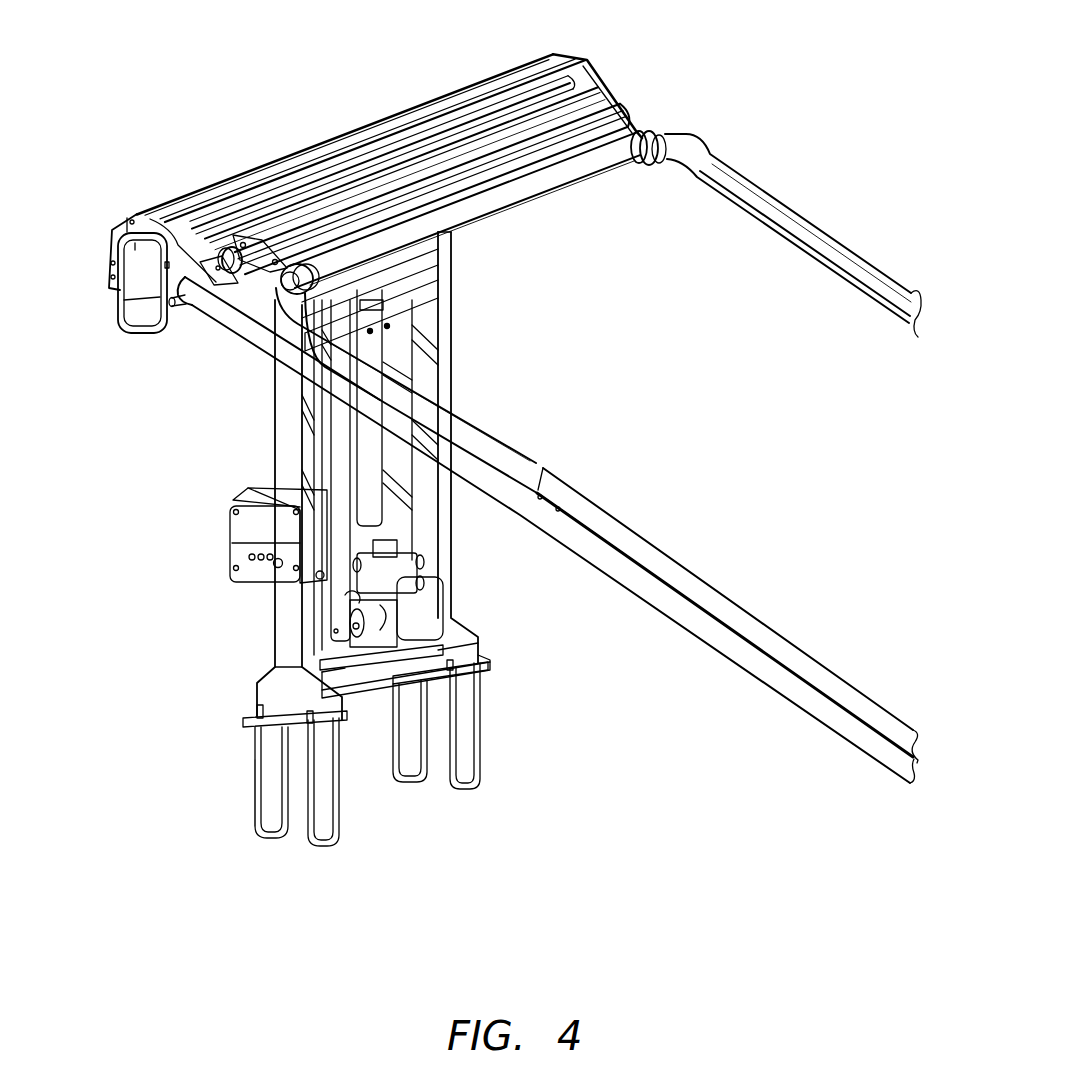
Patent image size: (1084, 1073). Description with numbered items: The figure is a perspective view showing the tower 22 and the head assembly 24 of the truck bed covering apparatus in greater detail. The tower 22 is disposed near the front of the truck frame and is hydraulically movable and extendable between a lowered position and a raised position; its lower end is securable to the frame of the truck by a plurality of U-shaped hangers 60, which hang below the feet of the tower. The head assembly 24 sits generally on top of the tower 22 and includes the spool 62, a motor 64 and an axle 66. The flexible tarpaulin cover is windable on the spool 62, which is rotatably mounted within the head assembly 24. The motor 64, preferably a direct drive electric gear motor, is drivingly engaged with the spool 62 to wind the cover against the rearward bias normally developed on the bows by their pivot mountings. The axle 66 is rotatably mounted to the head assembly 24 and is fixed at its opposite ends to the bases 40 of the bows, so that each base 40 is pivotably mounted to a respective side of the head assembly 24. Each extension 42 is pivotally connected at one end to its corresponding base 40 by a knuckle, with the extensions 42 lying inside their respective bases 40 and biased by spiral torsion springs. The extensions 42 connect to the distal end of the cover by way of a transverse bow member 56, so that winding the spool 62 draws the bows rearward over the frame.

The tower 22 is at (260, 610).
The head assembly 24 is at (316, 126).
The base 40 is at (787, 247).
The extension 42 is at (701, 160).
The transverse bow member 56 is at (601, 172).
The U-shaped hangers 60 is at (310, 842).
The spool 62 is at (553, 90).
The motor 64 is at (135, 323).
The axle 66 is at (510, 170).